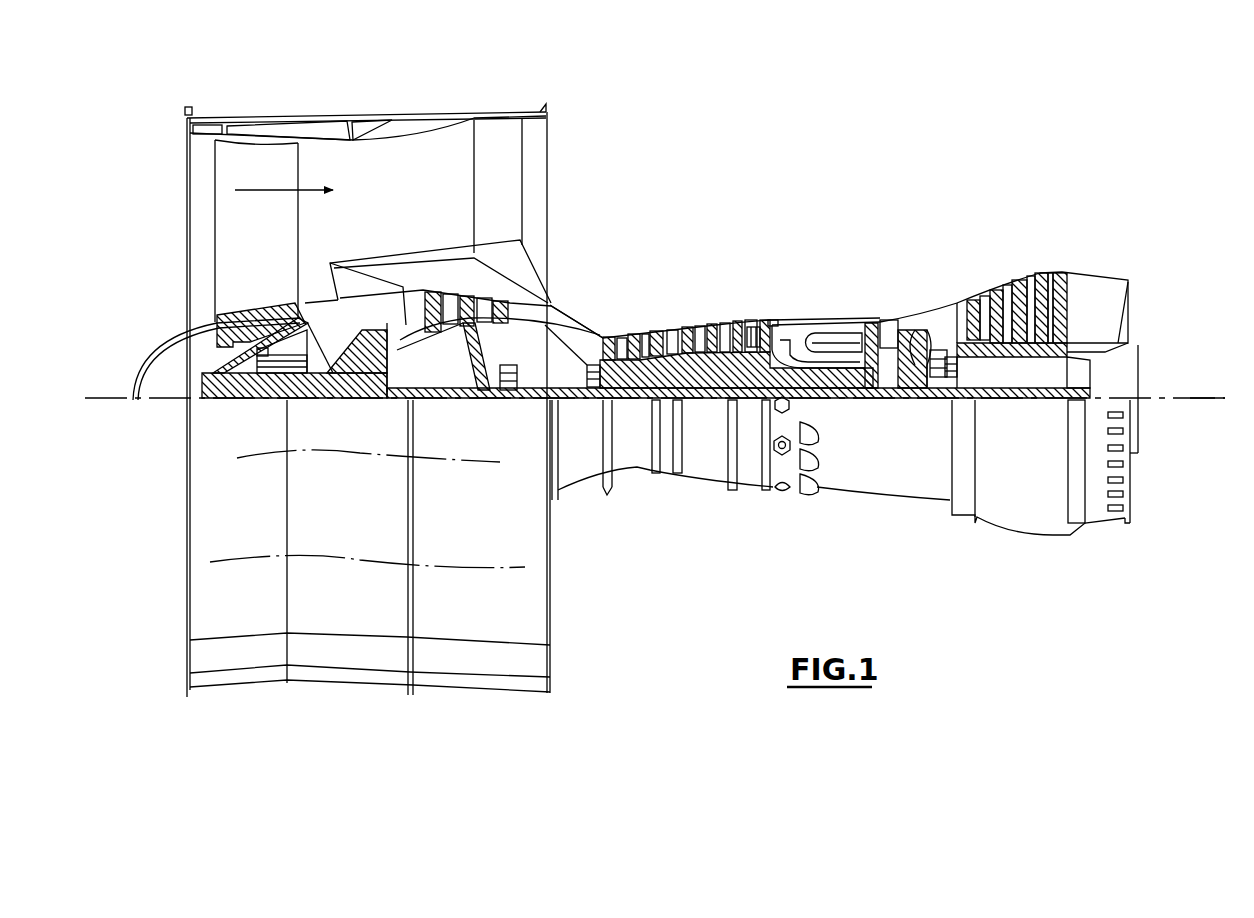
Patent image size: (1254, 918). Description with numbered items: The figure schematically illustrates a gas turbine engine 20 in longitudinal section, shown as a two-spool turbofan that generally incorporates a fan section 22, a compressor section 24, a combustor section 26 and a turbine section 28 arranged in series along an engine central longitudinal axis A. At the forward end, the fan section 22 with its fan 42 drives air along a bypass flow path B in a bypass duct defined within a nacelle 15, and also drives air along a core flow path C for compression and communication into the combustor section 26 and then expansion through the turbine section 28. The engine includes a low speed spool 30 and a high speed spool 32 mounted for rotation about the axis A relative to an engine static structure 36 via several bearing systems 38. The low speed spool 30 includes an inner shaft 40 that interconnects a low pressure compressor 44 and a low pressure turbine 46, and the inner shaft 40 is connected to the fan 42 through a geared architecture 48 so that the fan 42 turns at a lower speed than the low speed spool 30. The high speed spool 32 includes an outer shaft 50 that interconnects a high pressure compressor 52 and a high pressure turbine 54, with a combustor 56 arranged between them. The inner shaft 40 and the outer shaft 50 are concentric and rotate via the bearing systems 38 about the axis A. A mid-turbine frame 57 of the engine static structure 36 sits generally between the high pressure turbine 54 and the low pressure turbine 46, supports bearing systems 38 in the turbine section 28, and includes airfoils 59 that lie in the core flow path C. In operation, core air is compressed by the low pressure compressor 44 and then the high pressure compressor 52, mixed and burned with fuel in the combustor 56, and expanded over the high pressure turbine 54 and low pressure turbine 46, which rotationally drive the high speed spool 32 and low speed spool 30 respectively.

The gas turbine engine 20 is at (832, 164).
The fan section 22 is at (298, 105).
The nacelle 15 is at (368, 120).
The fan 42 is at (270, 245).
The compressor section 24 is at (601, 305).
The combustor section 26 is at (822, 294).
The turbine section 28 is at (972, 253).
The low speed spool 30 is at (707, 404).
The high speed spool 32 is at (753, 348).
The engine static structure 36 is at (747, 494).
The bearing systems 38 is at (507, 390).
The inner shaft 40 is at (572, 399).
The low pressure compressor 44 is at (470, 305).
The low pressure turbine 46 is at (1017, 287).
The geared architecture 48 is at (375, 378).
The outer shaft 50 is at (833, 390).
The high pressure compressor 52 is at (680, 357).
The high pressure turbine 54 is at (890, 320).
The combustor 56 is at (824, 340).
The mid-turbine frame 57 is at (931, 306).
The airfoils 59 is at (947, 350).
The engine central longitudinal axis A is at (1227, 398).
The bypass flow path B is at (268, 190).
The core flow path C is at (376, 297).